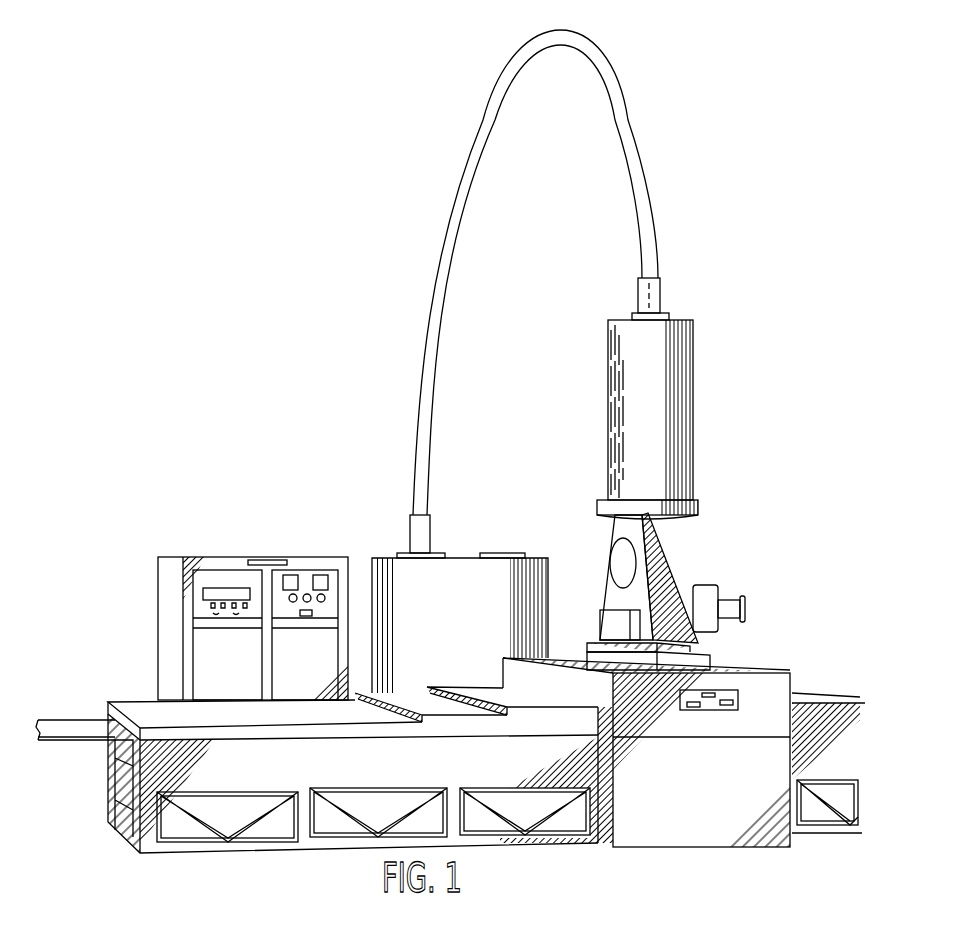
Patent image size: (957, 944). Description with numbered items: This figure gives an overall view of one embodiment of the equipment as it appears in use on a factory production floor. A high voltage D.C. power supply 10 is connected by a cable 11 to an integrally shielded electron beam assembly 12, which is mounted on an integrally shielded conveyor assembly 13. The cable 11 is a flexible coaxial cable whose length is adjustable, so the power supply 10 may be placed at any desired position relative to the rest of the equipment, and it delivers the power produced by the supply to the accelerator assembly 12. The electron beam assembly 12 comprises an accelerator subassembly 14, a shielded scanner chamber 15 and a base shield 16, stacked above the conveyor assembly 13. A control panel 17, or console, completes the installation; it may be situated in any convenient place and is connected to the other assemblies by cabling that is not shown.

The high voltage D.C. power supply 10 is at (380, 558).
The cable 11 is at (445, 236).
The integrally shielded electron beam assembly 12 is at (667, 474).
The integrally shielded conveyor assembly 13 is at (117, 689).
The accelerator subassembly 14 is at (690, 442).
The shielded scanner chamber 15 is at (688, 568).
The base shield 16 is at (757, 673).
The control panel 17 is at (207, 557).